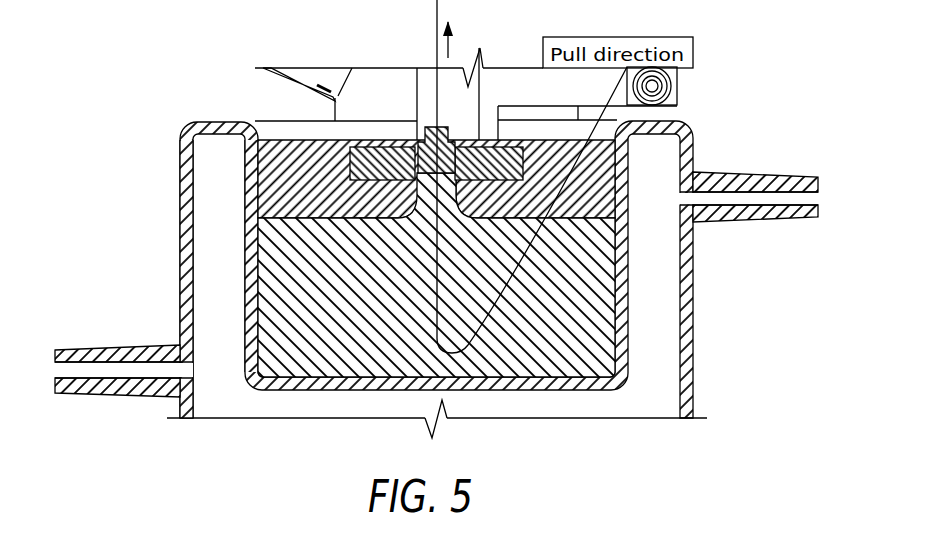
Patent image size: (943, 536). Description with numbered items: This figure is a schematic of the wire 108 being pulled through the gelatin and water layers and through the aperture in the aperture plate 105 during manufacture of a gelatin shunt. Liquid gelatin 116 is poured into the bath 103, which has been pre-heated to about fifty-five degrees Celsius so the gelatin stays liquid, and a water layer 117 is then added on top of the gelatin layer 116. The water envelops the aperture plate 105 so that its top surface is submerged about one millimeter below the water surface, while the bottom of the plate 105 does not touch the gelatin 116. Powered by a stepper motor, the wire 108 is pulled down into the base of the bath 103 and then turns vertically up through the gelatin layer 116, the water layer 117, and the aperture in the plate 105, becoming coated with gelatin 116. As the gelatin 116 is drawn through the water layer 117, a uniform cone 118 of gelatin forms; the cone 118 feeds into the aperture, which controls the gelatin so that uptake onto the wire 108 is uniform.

The bath 103 is at (180, 302).
The aperture plate 105 is at (408, 200).
The wire 108 is at (437, 38).
The gelatin 116 is at (603, 344).
The water layer 117 is at (268, 195).
The cone 118 is at (358, 162).